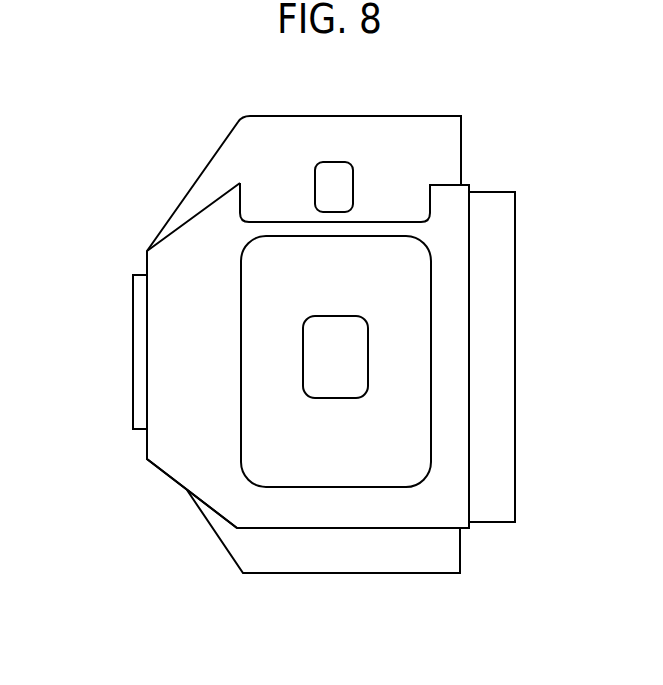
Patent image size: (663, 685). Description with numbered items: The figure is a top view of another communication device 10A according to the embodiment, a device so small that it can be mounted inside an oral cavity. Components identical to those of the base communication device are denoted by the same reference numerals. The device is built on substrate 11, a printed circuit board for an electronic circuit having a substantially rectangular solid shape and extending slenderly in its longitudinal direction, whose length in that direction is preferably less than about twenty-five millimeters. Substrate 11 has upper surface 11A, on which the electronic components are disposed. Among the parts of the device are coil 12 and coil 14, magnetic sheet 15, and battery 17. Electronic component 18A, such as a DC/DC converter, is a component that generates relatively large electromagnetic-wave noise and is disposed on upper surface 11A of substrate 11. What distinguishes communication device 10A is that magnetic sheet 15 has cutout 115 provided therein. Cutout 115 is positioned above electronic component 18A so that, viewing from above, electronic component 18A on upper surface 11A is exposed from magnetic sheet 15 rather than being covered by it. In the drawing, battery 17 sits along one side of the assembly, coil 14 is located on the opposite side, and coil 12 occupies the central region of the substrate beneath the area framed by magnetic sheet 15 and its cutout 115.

The communication device 10A is at (83, 150).
The upper surface 11A is at (442, 150).
The substrate 11 is at (272, 545).
The coil 12 is at (272, 279).
The coil 14 is at (143, 350).
The magnetic sheet 15 is at (175, 420).
The battery 17 is at (495, 408).
The electronic component 18A is at (333, 182).
The cutout 115 is at (267, 220).